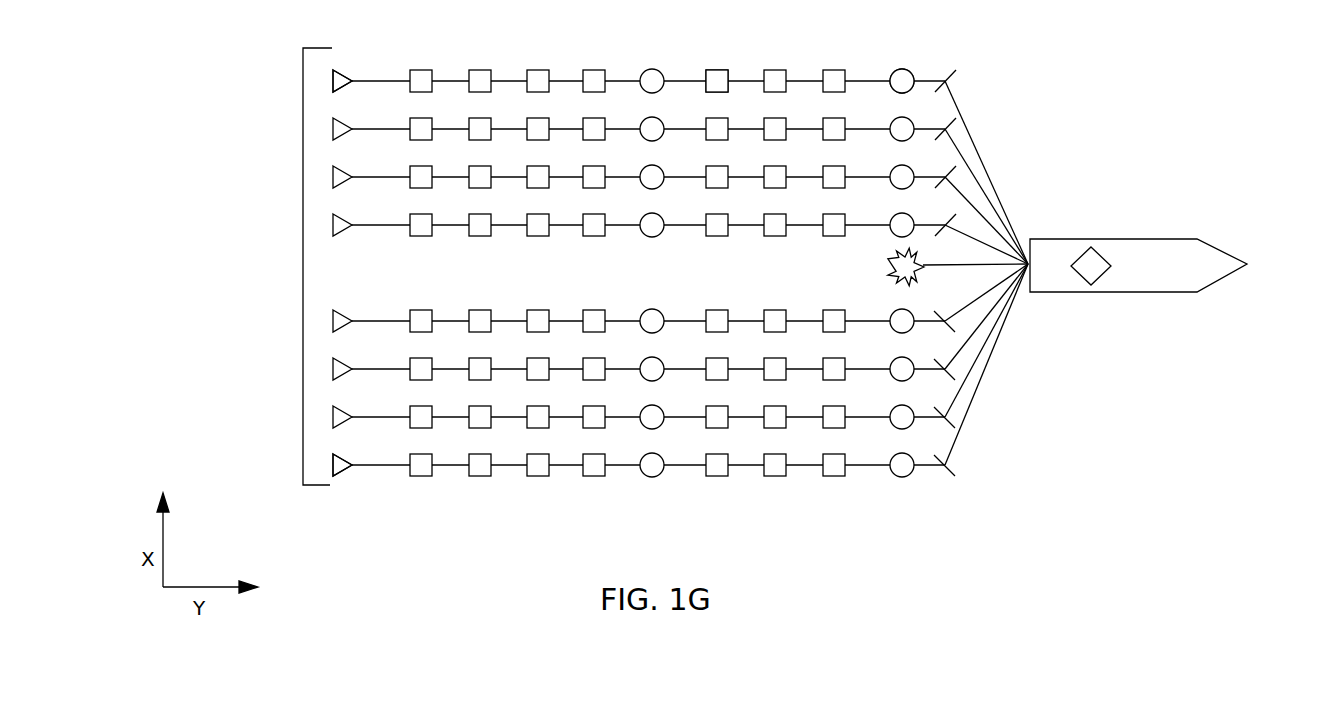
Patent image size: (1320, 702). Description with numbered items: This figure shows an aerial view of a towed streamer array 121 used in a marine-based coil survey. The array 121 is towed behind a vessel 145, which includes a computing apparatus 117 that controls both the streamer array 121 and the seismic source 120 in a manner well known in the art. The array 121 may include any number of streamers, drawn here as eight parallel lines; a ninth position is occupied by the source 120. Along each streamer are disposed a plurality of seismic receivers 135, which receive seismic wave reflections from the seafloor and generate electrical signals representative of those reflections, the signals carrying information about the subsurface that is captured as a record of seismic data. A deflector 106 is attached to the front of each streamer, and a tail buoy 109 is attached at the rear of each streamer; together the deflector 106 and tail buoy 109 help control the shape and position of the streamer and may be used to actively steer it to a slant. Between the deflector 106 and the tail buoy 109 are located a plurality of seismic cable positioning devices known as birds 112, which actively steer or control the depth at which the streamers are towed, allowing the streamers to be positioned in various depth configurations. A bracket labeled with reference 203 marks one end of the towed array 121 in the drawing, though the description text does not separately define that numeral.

The tail buoy 109 is at (340, 70).
The seismic receivers 135 is at (719, 70).
The birds 112 is at (905, 69).
The deflector 106 is at (955, 78).
The source 120 is at (893, 262).
The vessel 145 is at (1134, 239).
The computing apparatus 117 is at (1091, 285).
The streamer array 121 is at (303, 273).
The input port 203 is at (340, 478).